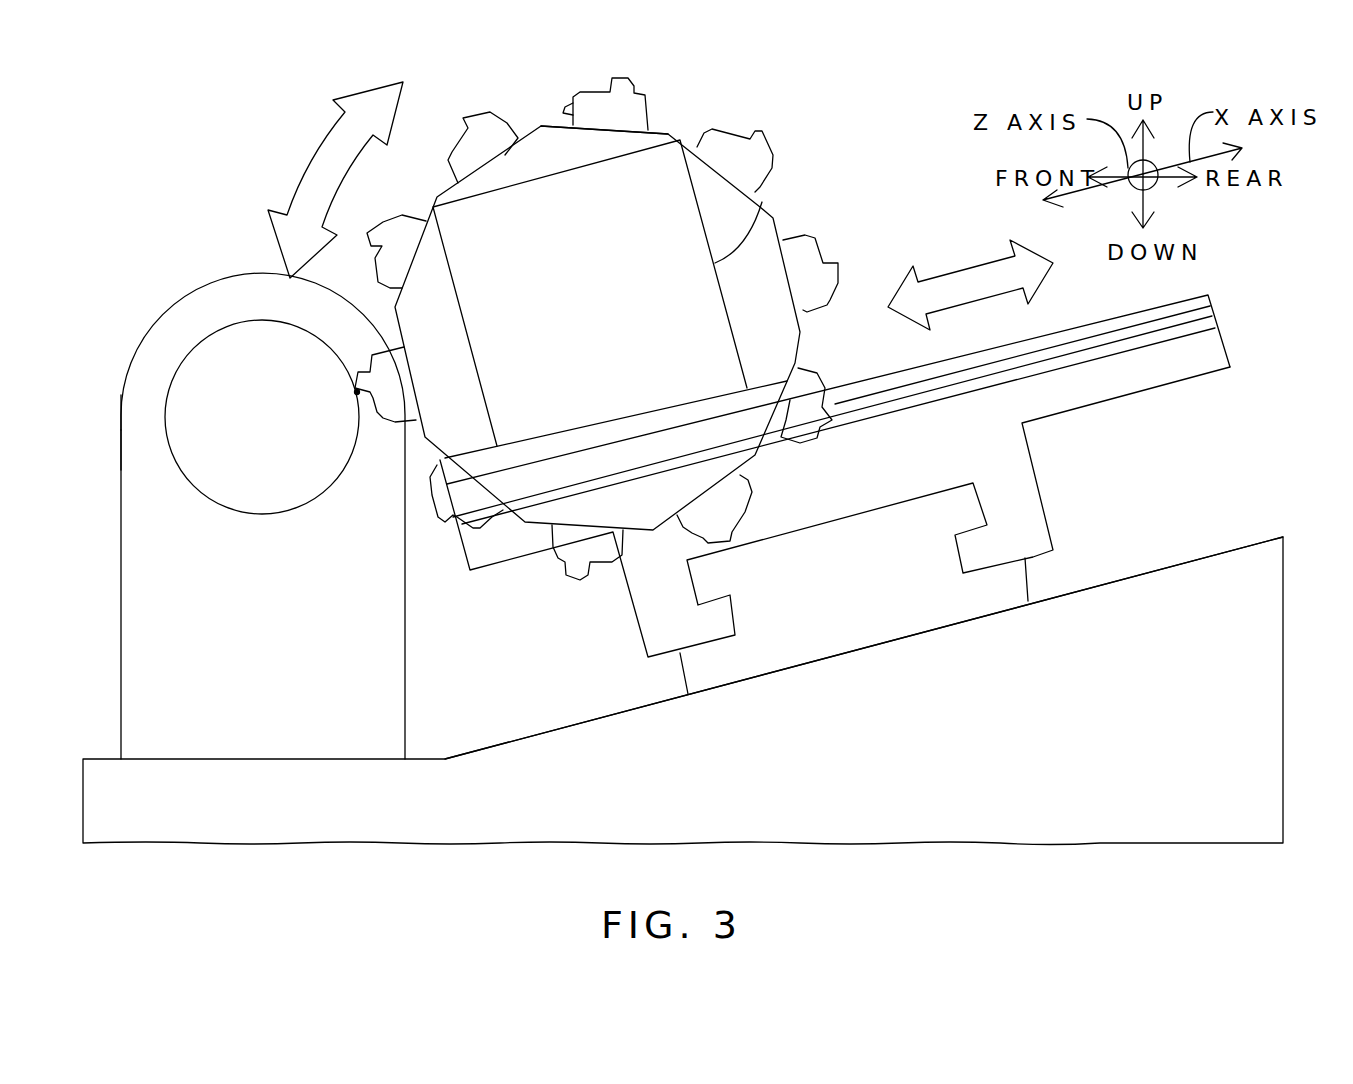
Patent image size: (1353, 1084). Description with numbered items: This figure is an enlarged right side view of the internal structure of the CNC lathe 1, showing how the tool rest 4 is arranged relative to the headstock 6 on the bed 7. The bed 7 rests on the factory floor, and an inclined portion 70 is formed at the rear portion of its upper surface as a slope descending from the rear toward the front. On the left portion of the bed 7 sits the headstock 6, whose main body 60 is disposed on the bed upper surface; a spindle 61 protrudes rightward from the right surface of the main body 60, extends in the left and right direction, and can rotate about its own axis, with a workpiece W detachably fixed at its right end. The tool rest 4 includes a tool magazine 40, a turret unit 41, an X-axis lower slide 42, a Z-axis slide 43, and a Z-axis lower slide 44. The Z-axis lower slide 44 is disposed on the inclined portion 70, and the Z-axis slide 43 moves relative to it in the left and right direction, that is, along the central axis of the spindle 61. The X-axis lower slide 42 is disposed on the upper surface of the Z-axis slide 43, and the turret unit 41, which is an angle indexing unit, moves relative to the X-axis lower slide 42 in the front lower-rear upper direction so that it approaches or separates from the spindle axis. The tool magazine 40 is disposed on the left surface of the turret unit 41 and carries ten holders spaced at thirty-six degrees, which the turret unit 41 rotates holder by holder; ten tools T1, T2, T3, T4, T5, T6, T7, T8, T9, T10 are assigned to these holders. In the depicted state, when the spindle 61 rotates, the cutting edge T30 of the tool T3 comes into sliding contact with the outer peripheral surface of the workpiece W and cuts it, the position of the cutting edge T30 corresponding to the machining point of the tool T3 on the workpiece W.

The CNC lathe 1 is at (174, 143).
The tool rest 4 is at (436, 198).
The tool magazine 40 is at (674, 130).
The turret unit 41 is at (763, 204).
The X-axis lower slide 42 is at (1170, 318).
The Z-axis slide 43 is at (1143, 375).
The Z-axis lower slide 44 is at (1010, 582).
The headstock 6 is at (183, 303).
The main body 60 is at (122, 418).
The spindle 61 is at (168, 430).
The workpiece W is at (217, 504).
The bed 7 is at (876, 810).
The inclined portion 70 is at (1175, 563).
The tool T1 is at (470, 116).
The tool T2 is at (372, 246).
The tool T3 is at (357, 378).
The tool T4 is at (437, 517).
The tool T5 is at (585, 580).
The tool T6 is at (733, 542).
The tool T7 is at (825, 388).
The tool T8 is at (840, 263).
The tool T9 is at (757, 131).
The tool T10 is at (565, 110).
The cutting edge T30 is at (357, 392).